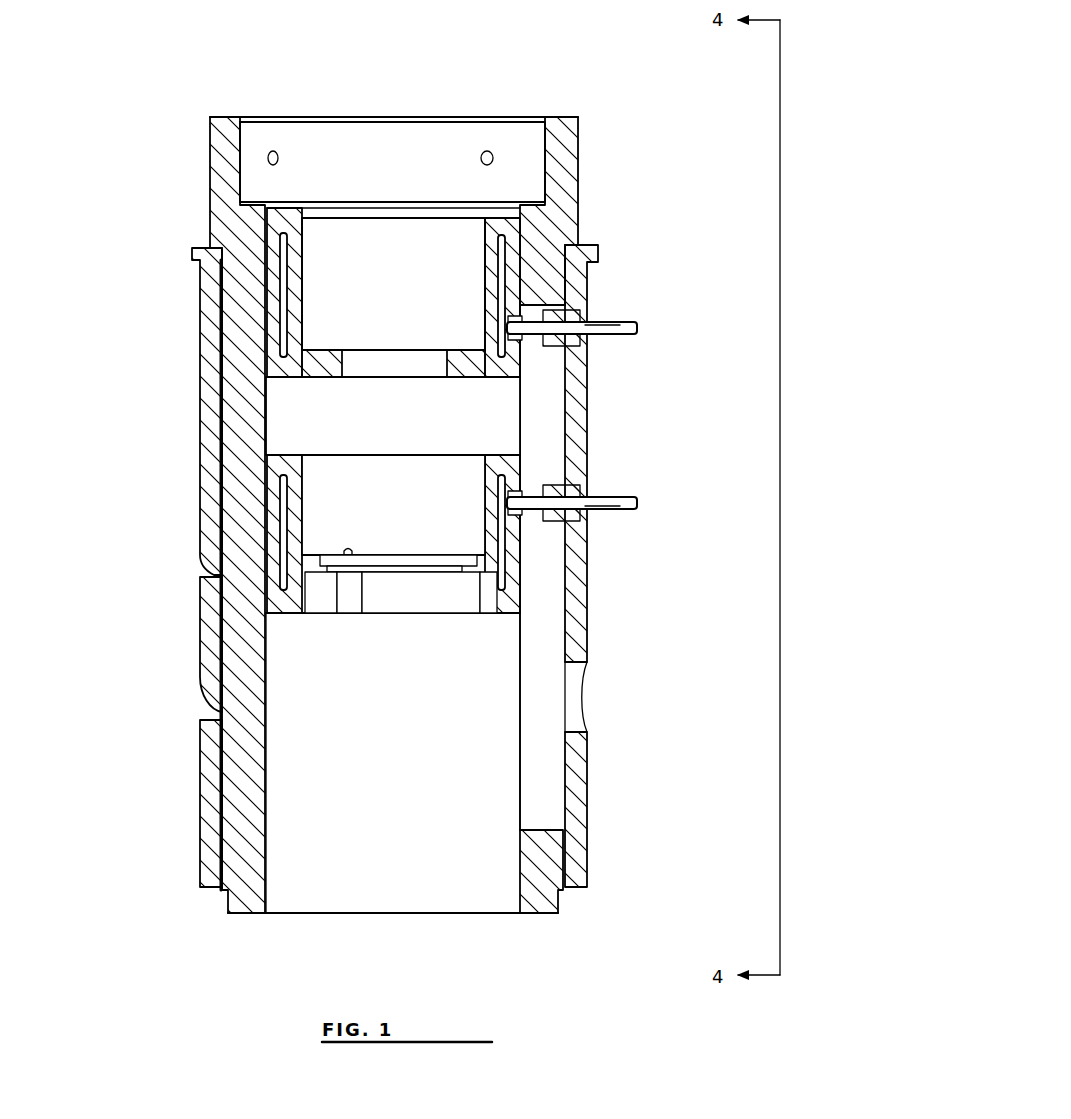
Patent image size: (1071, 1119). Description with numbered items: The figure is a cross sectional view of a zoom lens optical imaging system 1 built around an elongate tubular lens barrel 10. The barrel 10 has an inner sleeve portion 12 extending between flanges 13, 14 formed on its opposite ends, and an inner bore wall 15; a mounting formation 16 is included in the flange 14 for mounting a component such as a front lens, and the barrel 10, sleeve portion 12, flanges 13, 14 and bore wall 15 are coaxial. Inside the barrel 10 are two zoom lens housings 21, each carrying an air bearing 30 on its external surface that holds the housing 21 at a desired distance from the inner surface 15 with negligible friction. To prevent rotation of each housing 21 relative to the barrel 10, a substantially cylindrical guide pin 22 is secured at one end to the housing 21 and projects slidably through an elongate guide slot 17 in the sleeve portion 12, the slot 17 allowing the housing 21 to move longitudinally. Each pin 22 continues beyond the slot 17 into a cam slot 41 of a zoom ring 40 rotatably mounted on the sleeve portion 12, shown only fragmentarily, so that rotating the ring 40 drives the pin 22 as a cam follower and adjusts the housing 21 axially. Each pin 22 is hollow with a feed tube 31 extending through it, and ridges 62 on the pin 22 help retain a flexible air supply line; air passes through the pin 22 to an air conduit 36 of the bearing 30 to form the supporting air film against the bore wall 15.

The zoom lens optical imaging system 1 is at (148, 80).
The tubular lens barrel 10 is at (200, 226).
The inner sleeve portion 12 is at (243, 407).
The flange 13 is at (247, 903).
The flange 14 is at (578, 206).
The inner bore wall 15 is at (393, 763).
The mounting formation 16 is at (489, 151).
The elongate guide slot 17 is at (545, 615).
The lens housing 21 is at (365, 493).
The guide pin 22 is at (634, 314).
The air bearing 30 is at (272, 345).
The feed tube 31 is at (628, 492).
The air conduit 36 is at (505, 262).
The zoom ring 40 is at (587, 790).
The cam slot 41 is at (207, 562).
The ridges 62 is at (598, 492).